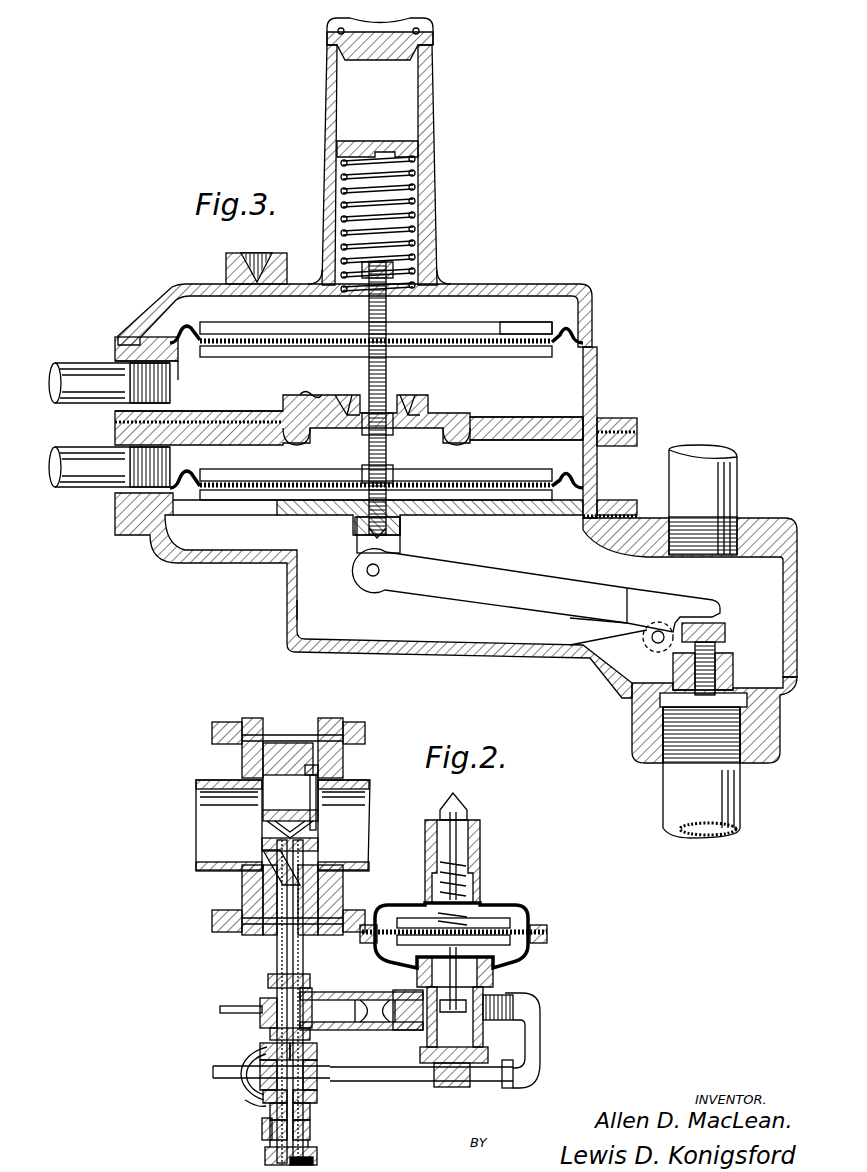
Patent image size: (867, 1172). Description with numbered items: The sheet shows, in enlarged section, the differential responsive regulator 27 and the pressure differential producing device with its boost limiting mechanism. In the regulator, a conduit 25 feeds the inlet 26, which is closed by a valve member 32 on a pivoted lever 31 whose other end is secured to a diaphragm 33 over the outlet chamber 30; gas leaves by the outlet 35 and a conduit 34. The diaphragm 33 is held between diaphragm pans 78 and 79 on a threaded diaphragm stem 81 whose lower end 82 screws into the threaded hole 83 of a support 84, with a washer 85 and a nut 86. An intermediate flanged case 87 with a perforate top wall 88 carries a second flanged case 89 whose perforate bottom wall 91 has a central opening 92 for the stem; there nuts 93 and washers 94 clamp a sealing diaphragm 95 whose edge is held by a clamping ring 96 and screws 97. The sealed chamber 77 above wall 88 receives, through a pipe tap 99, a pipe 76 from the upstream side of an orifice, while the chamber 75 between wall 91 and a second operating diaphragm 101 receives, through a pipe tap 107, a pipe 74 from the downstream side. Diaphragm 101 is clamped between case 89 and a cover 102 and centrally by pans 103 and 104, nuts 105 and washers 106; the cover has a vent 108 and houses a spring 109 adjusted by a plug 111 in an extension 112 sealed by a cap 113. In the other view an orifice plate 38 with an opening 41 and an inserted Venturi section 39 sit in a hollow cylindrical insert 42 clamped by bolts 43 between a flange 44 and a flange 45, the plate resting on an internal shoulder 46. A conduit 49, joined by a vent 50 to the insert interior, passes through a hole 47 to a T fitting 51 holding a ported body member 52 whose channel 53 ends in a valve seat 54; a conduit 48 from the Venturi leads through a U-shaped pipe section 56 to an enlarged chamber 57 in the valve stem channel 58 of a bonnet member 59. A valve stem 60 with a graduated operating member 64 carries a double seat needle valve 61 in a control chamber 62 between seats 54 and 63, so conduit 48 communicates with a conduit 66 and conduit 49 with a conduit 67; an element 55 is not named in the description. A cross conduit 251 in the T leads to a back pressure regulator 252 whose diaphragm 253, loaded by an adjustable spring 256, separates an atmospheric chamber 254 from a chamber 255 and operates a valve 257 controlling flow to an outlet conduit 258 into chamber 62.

In FIG. 3, the conduit 25 is at (670, 793).
In FIG. 3, the inlet 26 is at (660, 727).
In FIG. 3, the regulator 27 is at (287, 597).
In FIG. 3, the outlet chamber 30 is at (320, 618).
In FIG. 3, the pivoted lever 31 is at (490, 588).
In FIG. 3, the valve member 32 is at (717, 623).
In FIG. 3, the diaphragm 33 is at (175, 472).
In FIG. 3, the conduit 34 is at (742, 468).
In FIG. 3, the outlet 35 is at (753, 522).
In FIG. 3, the pipe 74 is at (84, 373).
In FIG. 3, the chamber 75 is at (220, 391).
In FIG. 3, the pipe 76 is at (82, 450).
In FIG. 3, the chamber 77 is at (313, 466).
In FIG. 3, the diaphragm pan 78 is at (552, 480).
In FIG. 3, the diaphragm pan 79 is at (538, 503).
In FIG. 3, the threaded diaphragm stem 81 is at (390, 453).
In FIG. 3, the lower end 82 is at (355, 522).
In FIG. 3, the threaded hole 83 is at (368, 535).
In FIG. 3, the support 84 is at (405, 553).
In FIG. 3, the washer 85 is at (427, 472).
In FIG. 3, the nut 86 is at (345, 480).
In FIG. 3, the intermediate flanged case 87 is at (600, 470).
In FIG. 3, the perforate top wall 88 is at (537, 430).
In FIG. 3, the second flanged case 89 is at (600, 400).
In FIG. 3, the perforate bottom wall 91 is at (510, 413).
In FIG. 3, the central opening 92 is at (285, 432).
In FIG. 3, the nuts 93 is at (400, 400).
In FIG. 3, the washers 94 is at (357, 398).
In FIG. 3, the sealing diaphragm 95 is at (338, 400).
In FIG. 3, the clamping ring 96 is at (287, 403).
In FIG. 3, the screws 97 is at (293, 392).
In FIG. 3, the threaded pipe tap 99 is at (137, 470).
In FIG. 3, the second operating diaphragm 101 is at (585, 312).
In FIG. 3, the cover 102 is at (543, 294).
In FIG. 3, the diaphragm pan 103 is at (540, 322).
In FIG. 3, the diaphragm pan 104 is at (553, 357).
In FIG. 3, the nuts 105 is at (420, 347).
In FIG. 3, the washers 106 is at (328, 337).
In FIG. 3, the threaded pipe tap 107 is at (157, 325).
In FIG. 3, the vent 108 is at (227, 277).
In FIG. 3, the spring 109 is at (420, 203).
In FIG. 3, the plug 111 is at (393, 150).
In FIG. 3, the extension 112 is at (435, 138).
In FIG. 3, the cap 113 is at (425, 45).
In FIG. 2, the orifice plate 38 is at (318, 783).
In FIG. 2, the inserted Venturi section 39 is at (353, 815).
In FIG. 2, the opening 41 is at (393, 865).
In FIG. 2, the hollow cylindrical body member 42 is at (283, 750).
In FIG. 2, the bolts 43 is at (357, 732).
In FIG. 2, the flange 44 is at (242, 762).
In FIG. 2, the flange 45 is at (323, 772).
In FIG. 2, the internal shoulder 46 is at (312, 765).
In FIG. 2, the hole 47 is at (270, 903).
In FIG. 2, the conduit 48 is at (307, 947).
In FIG. 2, the conduit 49 is at (278, 947).
In FIG. 2, the vent 50 is at (275, 868).
In FIG. 2, the T fitting 51 is at (268, 978).
In FIG. 2, the ported body member 52 is at (318, 1050).
In FIG. 2, the longitudinal channel 53 is at (268, 1033).
In FIG. 2, the valve seat 54 is at (360, 1063).
In FIG. 2, the fitting 55 is at (266, 1025).
In FIG. 2, the U-shaped pipe section 56 is at (243, 1100).
In FIG. 2, the enlarged chamber 57 is at (312, 1112).
In FIG. 2, the valve stem channel 58 is at (317, 1095).
In FIG. 2, the bonnet member 59 is at (312, 1124).
In FIG. 2, the valve stem 60 is at (262, 1127).
In FIG. 2, the double seat needle valve 61 is at (258, 1052).
In FIG. 2, the control chamber 62 is at (213, 1072).
In FIG. 2, the seat 63 is at (237, 1090).
In FIG. 2, the valve operating member 64 is at (317, 1158).
In FIG. 2, the conduit 66 is at (235, 1062).
In FIG. 2, the conduit 67 is at (220, 1007).
In FIG. 2, the cross conduit 251 is at (372, 1000).
In FIG. 2, the back pressure regulator 252 is at (523, 908).
In FIG. 2, the diaphragm 253 is at (530, 925).
In FIG. 2, the chamber 254 is at (505, 912).
In FIG. 2, the chamber 255 is at (493, 955).
In FIG. 2, the adjustable spring 256 is at (475, 867).
In FIG. 2, the valve 257 is at (505, 995).
In FIG. 2, the outlet conduit 258 is at (530, 1017).